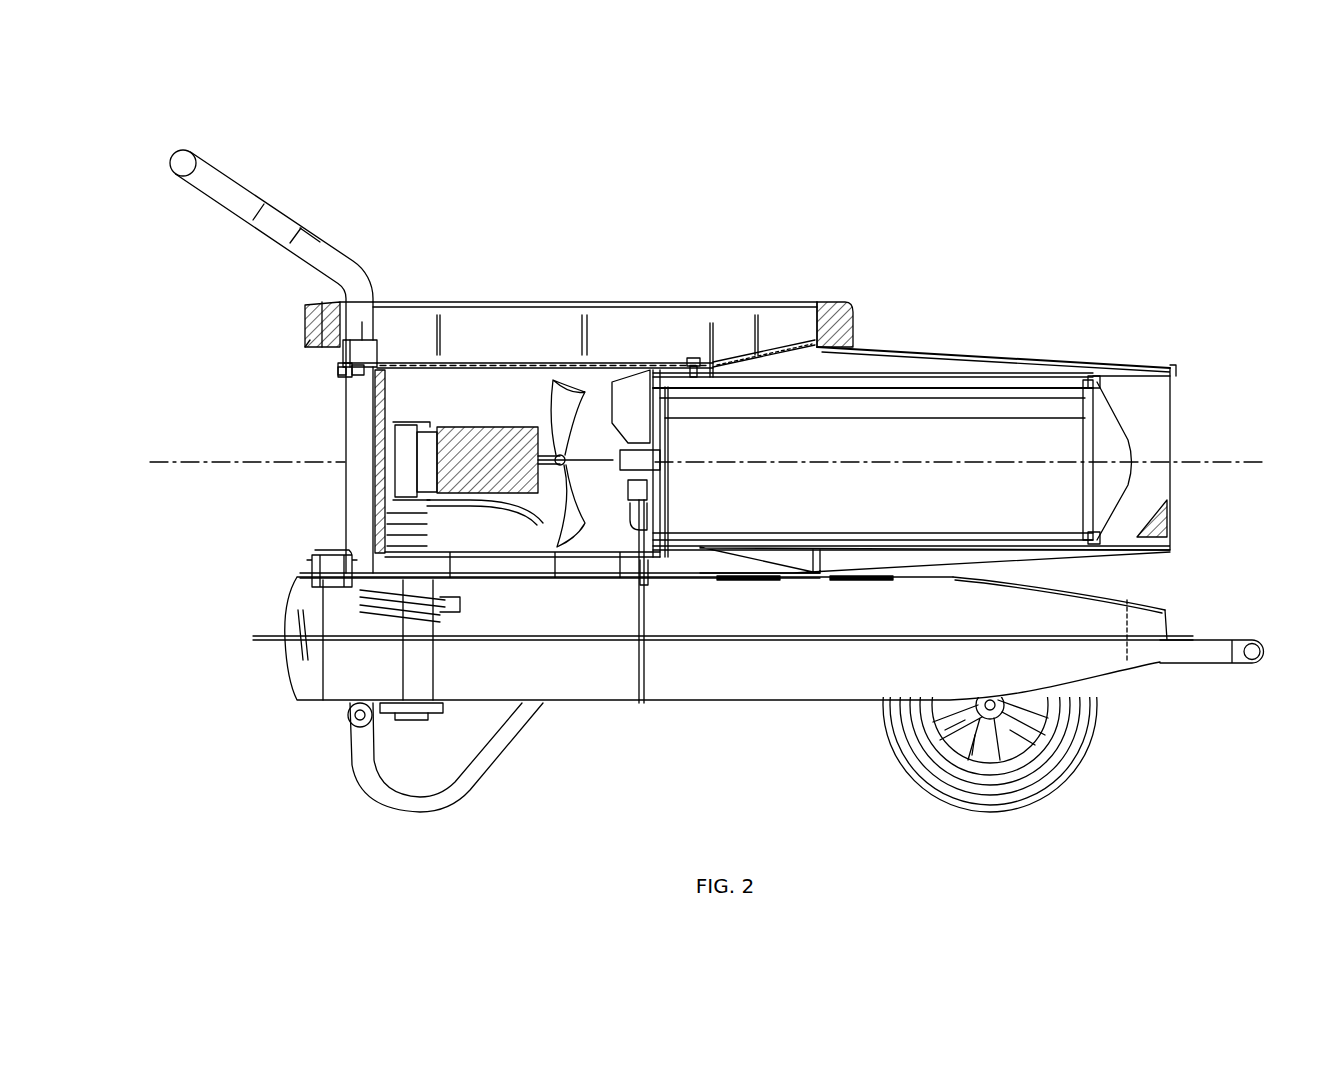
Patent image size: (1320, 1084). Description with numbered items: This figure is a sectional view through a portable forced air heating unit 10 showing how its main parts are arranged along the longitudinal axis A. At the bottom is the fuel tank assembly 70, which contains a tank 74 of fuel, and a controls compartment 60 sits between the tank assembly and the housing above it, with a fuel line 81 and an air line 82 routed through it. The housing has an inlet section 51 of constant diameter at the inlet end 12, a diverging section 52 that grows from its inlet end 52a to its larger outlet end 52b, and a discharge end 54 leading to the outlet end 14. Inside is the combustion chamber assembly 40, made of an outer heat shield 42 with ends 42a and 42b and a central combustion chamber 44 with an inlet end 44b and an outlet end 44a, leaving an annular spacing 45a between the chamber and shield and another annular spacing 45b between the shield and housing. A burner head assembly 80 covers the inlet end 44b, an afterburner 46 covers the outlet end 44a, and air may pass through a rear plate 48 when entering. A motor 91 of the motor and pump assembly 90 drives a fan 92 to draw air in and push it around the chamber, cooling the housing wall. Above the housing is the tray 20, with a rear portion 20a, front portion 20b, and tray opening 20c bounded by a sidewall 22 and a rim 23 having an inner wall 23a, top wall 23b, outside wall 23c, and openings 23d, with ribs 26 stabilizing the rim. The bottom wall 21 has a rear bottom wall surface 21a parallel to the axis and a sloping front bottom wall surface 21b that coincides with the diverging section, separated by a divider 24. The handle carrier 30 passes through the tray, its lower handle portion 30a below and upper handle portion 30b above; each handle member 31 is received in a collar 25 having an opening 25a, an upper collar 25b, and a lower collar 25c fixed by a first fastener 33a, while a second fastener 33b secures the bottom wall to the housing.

The portable forced air heating unit 10 is at (1108, 165).
The inlet end 12 is at (228, 387).
The outlet end 14 is at (1202, 497).
The tray 20 is at (604, 252).
The rear portion of the tray 20a is at (367, 240).
The front portion of the tray 20b is at (825, 275).
The tray opening 20c is at (660, 310).
The bottom wall 21 is at (488, 357).
The rear bottom wall surface 21a is at (572, 352).
The front bottom wall surface 21b is at (778, 345).
The sidewall 22 is at (427, 302).
The rim 23 is at (843, 302).
The inner wall 23a is at (440, 302).
The top wall 23b is at (358, 318).
The outside wall 23c is at (305, 333).
The openings 23d is at (320, 305).
The divider 24 is at (712, 335).
The tray collar 25 is at (340, 363).
The opening 25a is at (372, 338).
The upper collar 25b is at (365, 345).
The lower collar 25c is at (345, 378).
The ribs 26 is at (315, 345).
The handle carrier 30 is at (165, 168).
The lower handle portion 30a is at (300, 510).
The upper handle portion 30b is at (250, 232).
The handle member 31 is at (343, 441).
The first fastener 33a is at (338, 375).
The second fastener 33b is at (693, 357).
The combustion chamber assembly 40 is at (967, 355).
The heat shield 42 is at (1020, 358).
The heat shield end 42a is at (1085, 577).
The heat shield end 42b is at (655, 580).
The combustion chamber 44 is at (1075, 375).
The outlet end 44a is at (1065, 520).
The inlet end 44b is at (672, 518).
The annular spacing 45a is at (1100, 382).
The annular spacing 45b is at (1175, 372).
The afterburner 46 is at (1115, 475).
The rear plate 48 is at (665, 432).
The inlet section 51 is at (497, 488).
The diverging section 52 is at (822, 428).
The inlet end of diverging section 52a is at (713, 378).
The outlet end of diverging section 52b is at (817, 373).
The discharge end 54 is at (994, 443).
The controls compartment 60 is at (350, 583).
The fuel tank assembly 70 is at (1170, 612).
The tank 74 is at (1097, 660).
The burner head assembly 80 is at (600, 412).
The fuel line 81 is at (622, 503).
The air line 82 is at (652, 547).
The motor and pump assembly 90 is at (430, 570).
The motor 91 is at (490, 500).
The fan 92 is at (575, 530).
The longitudinal axis A is at (1237, 462).